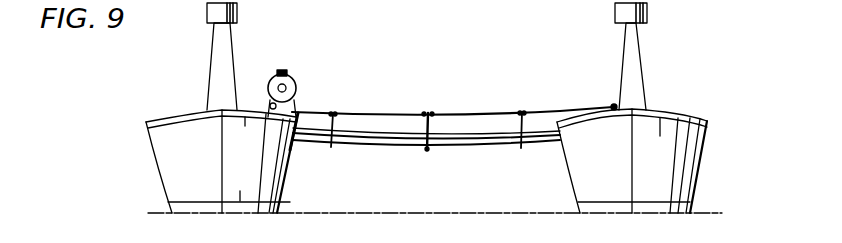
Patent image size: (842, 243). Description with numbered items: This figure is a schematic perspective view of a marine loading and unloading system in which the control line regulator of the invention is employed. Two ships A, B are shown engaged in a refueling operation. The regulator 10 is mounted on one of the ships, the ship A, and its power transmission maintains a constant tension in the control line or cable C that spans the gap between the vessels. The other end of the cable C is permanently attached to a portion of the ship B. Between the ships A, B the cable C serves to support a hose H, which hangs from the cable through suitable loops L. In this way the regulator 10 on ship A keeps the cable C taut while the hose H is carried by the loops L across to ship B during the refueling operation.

The ship A is at (263, 38).
The ship B is at (722, 83).
The regulator 10 is at (309, 71).
The control line or cable C is at (386, 113).
The loops L is at (435, 128).
The hose H is at (488, 150).